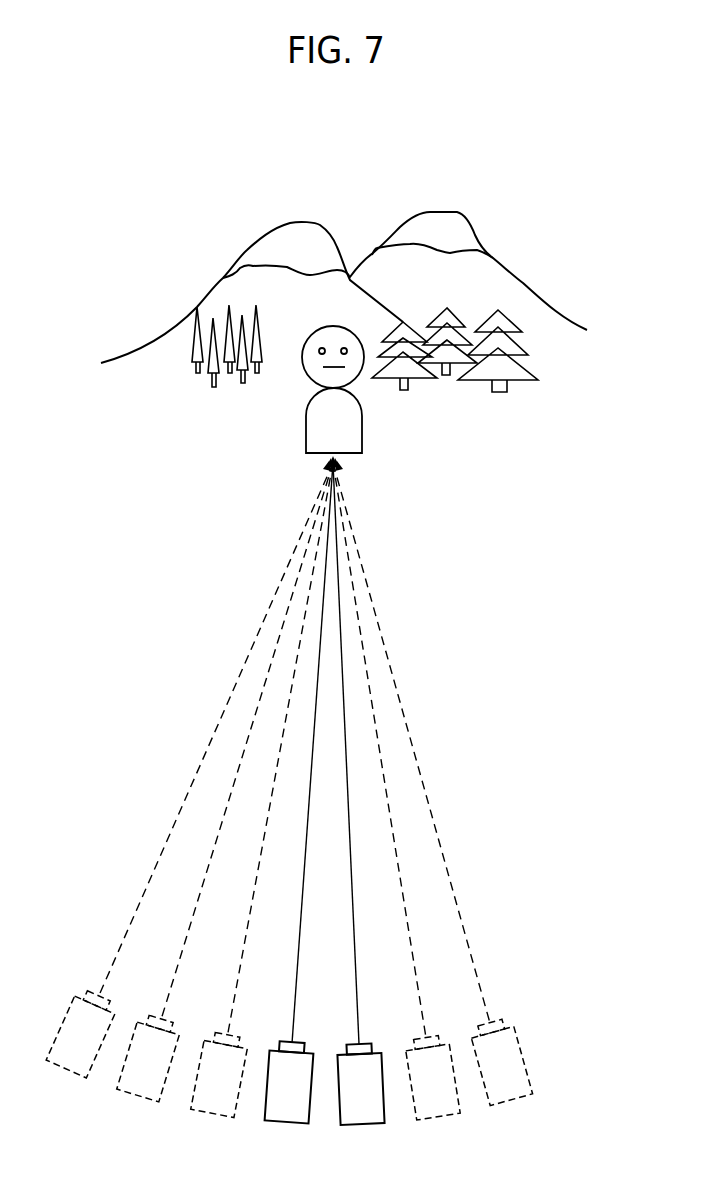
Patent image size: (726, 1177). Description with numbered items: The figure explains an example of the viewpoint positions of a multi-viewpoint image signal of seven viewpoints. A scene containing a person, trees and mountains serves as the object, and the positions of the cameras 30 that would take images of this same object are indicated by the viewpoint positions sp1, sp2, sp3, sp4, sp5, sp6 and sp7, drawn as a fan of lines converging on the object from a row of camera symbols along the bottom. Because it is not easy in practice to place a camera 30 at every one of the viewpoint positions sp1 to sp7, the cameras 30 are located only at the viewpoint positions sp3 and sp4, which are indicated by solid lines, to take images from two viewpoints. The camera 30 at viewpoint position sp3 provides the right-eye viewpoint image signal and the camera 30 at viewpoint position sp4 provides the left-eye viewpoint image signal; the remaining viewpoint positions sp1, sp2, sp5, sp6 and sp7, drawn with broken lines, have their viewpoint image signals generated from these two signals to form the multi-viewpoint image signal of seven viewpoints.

The camera 30 is at (320, 811).
The viewpoint position sp1 is at (502, 1078).
The viewpoint position sp2 is at (433, 1096).
The viewpoint position sp3 is at (361, 1104).
The viewpoint position sp4 is at (289, 1103).
The viewpoint position sp5 is at (217, 1093).
The viewpoint position sp6 is at (146, 1076).
The viewpoint position sp7 is at (77, 1048).